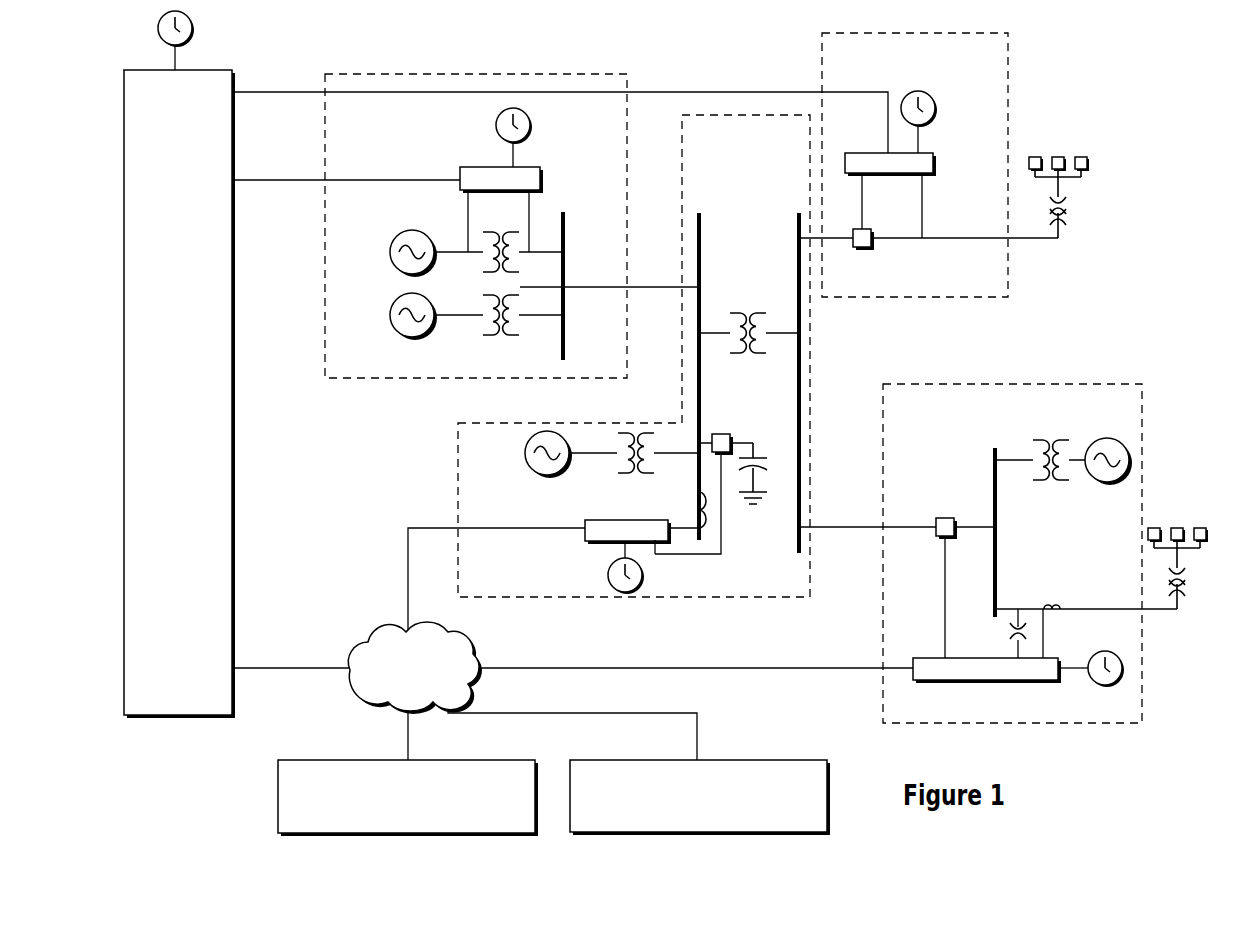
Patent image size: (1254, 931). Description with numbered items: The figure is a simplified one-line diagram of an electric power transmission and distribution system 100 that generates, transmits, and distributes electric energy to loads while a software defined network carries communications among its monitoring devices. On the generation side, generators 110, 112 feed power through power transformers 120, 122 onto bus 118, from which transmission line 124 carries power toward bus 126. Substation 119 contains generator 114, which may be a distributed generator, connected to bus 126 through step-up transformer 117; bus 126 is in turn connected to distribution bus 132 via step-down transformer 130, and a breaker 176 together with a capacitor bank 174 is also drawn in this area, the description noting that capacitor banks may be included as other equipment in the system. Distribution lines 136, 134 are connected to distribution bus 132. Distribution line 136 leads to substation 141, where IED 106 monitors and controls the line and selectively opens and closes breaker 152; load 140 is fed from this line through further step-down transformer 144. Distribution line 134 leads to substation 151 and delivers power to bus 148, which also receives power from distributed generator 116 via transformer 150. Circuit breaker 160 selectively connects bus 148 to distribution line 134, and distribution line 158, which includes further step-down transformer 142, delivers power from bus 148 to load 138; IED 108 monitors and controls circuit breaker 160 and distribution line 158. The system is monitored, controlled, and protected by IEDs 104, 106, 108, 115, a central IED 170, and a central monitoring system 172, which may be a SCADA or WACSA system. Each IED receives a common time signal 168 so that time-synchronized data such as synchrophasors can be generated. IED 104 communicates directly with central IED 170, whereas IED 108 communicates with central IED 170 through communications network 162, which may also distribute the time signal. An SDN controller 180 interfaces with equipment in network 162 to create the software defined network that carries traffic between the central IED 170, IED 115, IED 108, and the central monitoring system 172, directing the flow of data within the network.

The electric power transmission and distribution system 100 is at (1122, 92).
The IED 104 is at (478, 167).
The IED 106 is at (855, 152).
The IED 108 is at (1035, 682).
The generator 110 is at (390, 252).
The generator 112 is at (390, 315).
The generator 114 is at (525, 452).
The IED 115 is at (652, 520).
The distributed generator 116 is at (1097, 482).
The step-up transformer 117 is at (622, 472).
The bus 118 is at (566, 338).
The substation 119 is at (565, 599).
The power transformer 120 is at (484, 272).
The power transformer 122 is at (506, 337).
The power transmission and delivery line 124 is at (640, 289).
The bus 126 is at (702, 352).
The step-down transformer 130 is at (748, 313).
The distribution bus 132 is at (797, 517).
The distribution line 134 is at (893, 529).
The distribution line 136 is at (834, 240).
The load 138 is at (1172, 535).
The load 140 is at (1092, 176).
The substation 141 is at (985, 298).
The step-down transformer 142 is at (1187, 590).
The step-down transformer 144 is at (1068, 220).
The bus 148 is at (992, 450).
The transformer 150 is at (1054, 440).
The substation 151 is at (1080, 724).
The breaker 152 is at (873, 248).
The distribution line 158 is at (1078, 605).
The circuit breaker 160 is at (940, 517).
The communications network 162 is at (392, 693).
The common time signal 168 is at (193, 30).
The central IED 170 is at (162, 427).
The central monitoring system 172 is at (390, 819).
The capacitor bank 174 is at (762, 457).
The breaker 176 is at (725, 434).
The SDN controller 180 is at (682, 819).